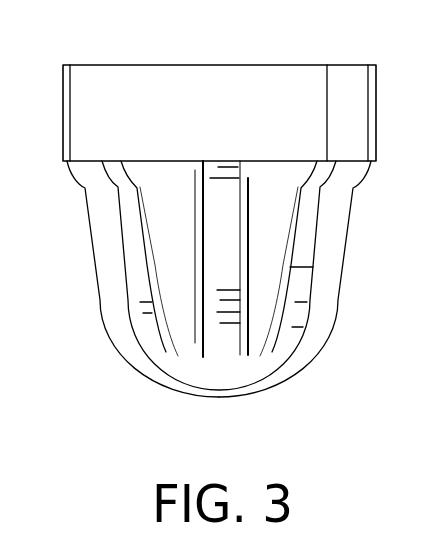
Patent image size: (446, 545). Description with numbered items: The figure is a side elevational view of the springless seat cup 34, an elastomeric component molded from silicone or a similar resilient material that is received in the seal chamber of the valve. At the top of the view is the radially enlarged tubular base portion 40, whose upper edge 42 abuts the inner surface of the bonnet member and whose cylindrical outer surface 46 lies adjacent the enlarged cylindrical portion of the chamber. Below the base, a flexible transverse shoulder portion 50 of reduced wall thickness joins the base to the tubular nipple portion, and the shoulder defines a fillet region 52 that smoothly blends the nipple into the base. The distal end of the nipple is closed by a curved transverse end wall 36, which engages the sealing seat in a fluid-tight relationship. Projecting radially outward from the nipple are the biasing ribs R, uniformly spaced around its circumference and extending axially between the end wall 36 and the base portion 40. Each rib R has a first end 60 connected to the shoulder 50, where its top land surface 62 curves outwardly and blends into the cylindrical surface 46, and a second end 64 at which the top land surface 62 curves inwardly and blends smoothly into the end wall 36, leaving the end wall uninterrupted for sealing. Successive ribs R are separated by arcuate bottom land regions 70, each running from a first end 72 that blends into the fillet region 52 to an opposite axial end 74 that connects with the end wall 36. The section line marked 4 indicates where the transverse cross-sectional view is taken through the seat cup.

The tubular base portion 40 is at (62, 100).
The upper edge 42 is at (350, 65).
The cylindrical outer surface 46 is at (115, 116).
The shoulder portion 50 is at (283, 161).
The fillet region 52 is at (167, 178).
The seat cup 34 is at (100, 354).
The end wall 36 is at (284, 389).
The first end 60 is at (110, 181).
The top land surface 62 is at (216, 230).
The second end 64 is at (219, 335).
The bottom land region 70 is at (262, 247).
The first end 72 is at (276, 228).
The opposite axial end 74 is at (261, 333).
The biasing rib R is at (137, 293).
The section line 4- 4 is at (163, 266).